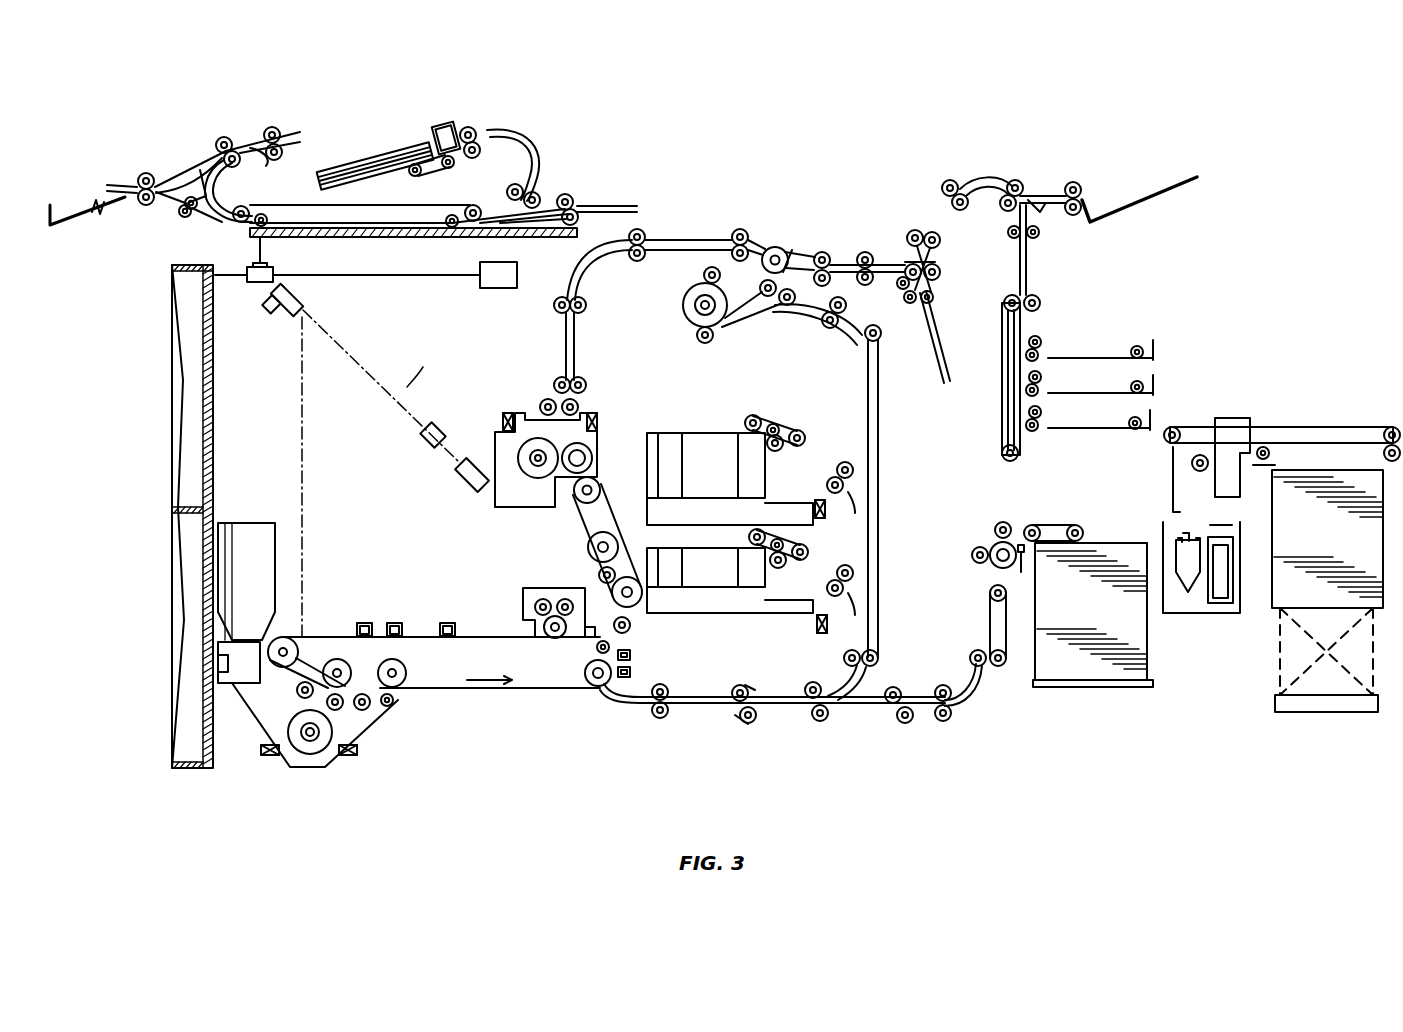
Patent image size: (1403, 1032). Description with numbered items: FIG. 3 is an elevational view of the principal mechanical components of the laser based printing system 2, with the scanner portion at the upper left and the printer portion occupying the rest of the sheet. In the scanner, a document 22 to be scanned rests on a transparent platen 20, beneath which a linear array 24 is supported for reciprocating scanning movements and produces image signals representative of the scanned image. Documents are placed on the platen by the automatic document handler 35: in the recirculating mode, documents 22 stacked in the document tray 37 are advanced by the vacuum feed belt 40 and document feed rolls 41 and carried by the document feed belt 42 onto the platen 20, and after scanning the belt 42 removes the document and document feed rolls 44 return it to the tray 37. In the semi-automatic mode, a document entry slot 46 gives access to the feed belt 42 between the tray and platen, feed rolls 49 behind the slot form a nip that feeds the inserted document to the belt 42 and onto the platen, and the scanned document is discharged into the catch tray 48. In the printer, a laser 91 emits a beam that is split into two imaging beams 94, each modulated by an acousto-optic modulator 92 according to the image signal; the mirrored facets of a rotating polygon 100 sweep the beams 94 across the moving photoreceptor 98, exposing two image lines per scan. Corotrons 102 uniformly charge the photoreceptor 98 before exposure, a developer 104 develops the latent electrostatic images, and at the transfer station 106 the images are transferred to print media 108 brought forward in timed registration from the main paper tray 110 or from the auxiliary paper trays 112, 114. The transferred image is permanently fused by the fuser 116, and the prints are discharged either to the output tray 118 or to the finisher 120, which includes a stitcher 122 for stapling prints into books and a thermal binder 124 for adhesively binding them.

The printing system 2 is at (768, 153).
The transparent platen 20 is at (412, 238).
The document 22 is at (366, 186).
The linear array 24 is at (247, 268).
The automatic document handler 35 is at (410, 148).
The document tray 37 is at (366, 186).
The vacuum feed belt 40 is at (455, 157).
The document feed rolls 41 is at (482, 143).
The document feed belt 42 is at (408, 204).
The document feed rolls 44 is at (227, 176).
The document entry slot 46 is at (600, 199).
The catch tray 48 is at (108, 207).
The feed rolls 49 is at (572, 196).
The laser 91 is at (468, 478).
The acousto-optic modulator 92 is at (440, 430).
The imaging beams 94 is at (427, 361).
The photoreceptor 98 is at (474, 637).
The rotating polygon 100 is at (290, 312).
The corotrons 102 is at (446, 623).
The developer 104 is at (377, 727).
The transfer station 106 is at (608, 715).
The print media 108 is at (1147, 643).
The main paper tray 110 is at (1073, 687).
The auxiliary paper tray 112 is at (700, 618).
The auxiliary paper tray 114 is at (702, 437).
The fuser 116 is at (617, 440).
The output tray 118 is at (1173, 192).
The finisher 120 is at (1171, 378).
The stitcher 122 is at (1152, 368).
The thermal binder 124 is at (1139, 505).